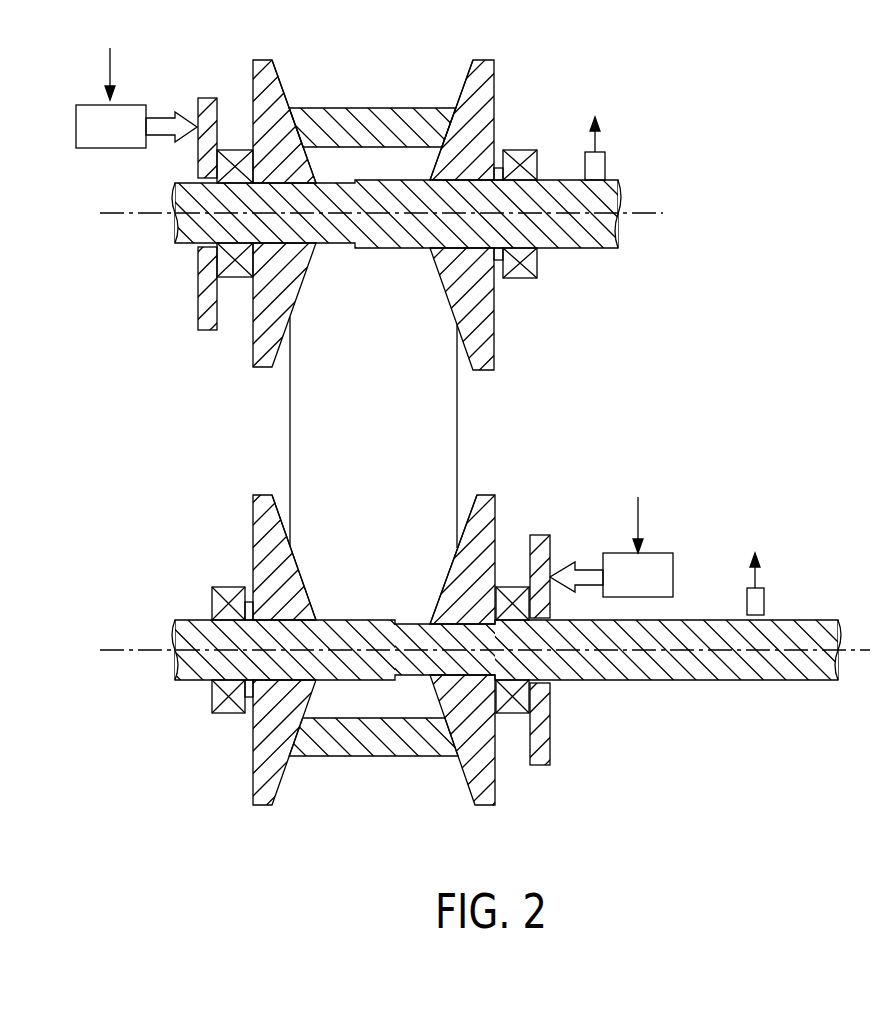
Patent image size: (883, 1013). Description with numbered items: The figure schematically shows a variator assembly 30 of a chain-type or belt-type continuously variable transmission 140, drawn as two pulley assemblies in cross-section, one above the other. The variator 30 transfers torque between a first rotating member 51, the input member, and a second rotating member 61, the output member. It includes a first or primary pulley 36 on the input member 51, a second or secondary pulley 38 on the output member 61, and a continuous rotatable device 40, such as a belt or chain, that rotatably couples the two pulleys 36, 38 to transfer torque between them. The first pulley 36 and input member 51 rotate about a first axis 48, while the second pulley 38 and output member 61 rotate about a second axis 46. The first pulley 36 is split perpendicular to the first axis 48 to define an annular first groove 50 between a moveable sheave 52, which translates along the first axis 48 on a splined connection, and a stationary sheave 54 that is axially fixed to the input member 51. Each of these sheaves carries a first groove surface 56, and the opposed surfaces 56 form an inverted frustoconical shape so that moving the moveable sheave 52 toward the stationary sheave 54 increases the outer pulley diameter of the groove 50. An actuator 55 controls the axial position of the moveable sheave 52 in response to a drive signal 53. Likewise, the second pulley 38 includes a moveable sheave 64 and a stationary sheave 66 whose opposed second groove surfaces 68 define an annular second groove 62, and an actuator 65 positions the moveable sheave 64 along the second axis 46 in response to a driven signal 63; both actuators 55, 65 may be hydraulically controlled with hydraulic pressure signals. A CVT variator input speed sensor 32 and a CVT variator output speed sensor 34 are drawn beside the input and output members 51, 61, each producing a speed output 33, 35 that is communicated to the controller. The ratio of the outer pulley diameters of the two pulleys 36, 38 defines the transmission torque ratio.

The variator assembly 30 is at (223, 760).
The continuously variable transmission 140 is at (188, 795).
The CVT variator input speed sensor 32 is at (608, 148).
The first sensor output signal 33 is at (571, 163).
The CVT variator output speed sensor 34 is at (764, 584).
The second sensor output signal 35 is at (722, 602).
The first pulley 36 is at (441, 506).
The second pulley 38 is at (441, 506).
The continuous rotatable device 40 is at (457, 412).
The second axis 46 is at (123, 655).
The first axis 48 is at (120, 220).
The annular first groove 50 is at (367, 94).
The first rotating member 51 is at (590, 248).
The moveable first sheave 52 is at (258, 78).
The drive signal 53 is at (120, 46).
The stationary first sheave 54 is at (492, 78).
The actuator 55 is at (76, 130).
The first groove surface 56 is at (280, 107).
The second rotating member 61 is at (667, 680).
The annular second groove 62 is at (366, 776).
The driven signal 63 is at (648, 493).
The moveable second sheave 64 is at (497, 515).
The actuator 65 is at (665, 553).
The stationary second sheave 66 is at (253, 548).
The second groove surface 68 is at (278, 500).